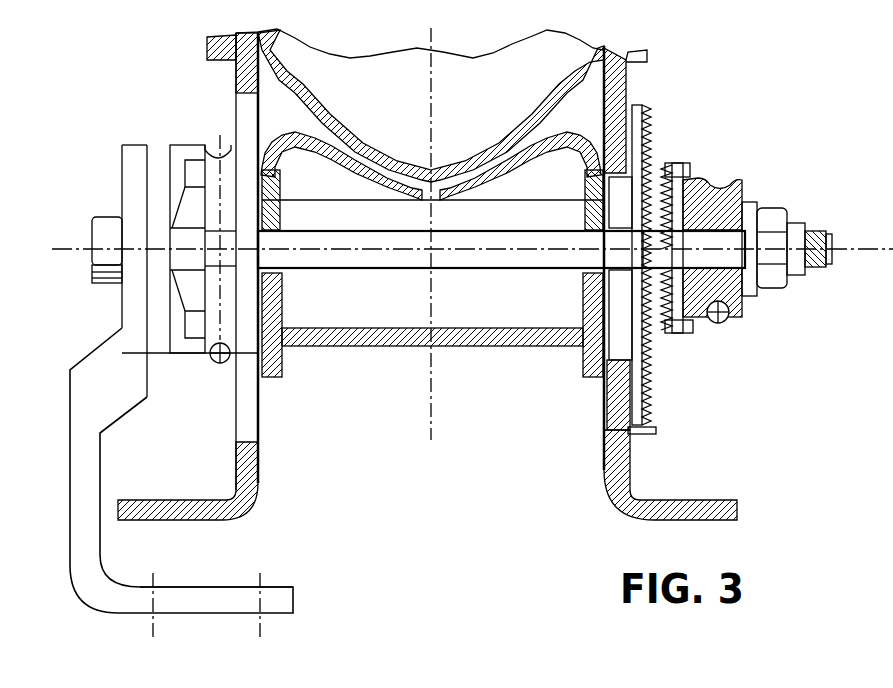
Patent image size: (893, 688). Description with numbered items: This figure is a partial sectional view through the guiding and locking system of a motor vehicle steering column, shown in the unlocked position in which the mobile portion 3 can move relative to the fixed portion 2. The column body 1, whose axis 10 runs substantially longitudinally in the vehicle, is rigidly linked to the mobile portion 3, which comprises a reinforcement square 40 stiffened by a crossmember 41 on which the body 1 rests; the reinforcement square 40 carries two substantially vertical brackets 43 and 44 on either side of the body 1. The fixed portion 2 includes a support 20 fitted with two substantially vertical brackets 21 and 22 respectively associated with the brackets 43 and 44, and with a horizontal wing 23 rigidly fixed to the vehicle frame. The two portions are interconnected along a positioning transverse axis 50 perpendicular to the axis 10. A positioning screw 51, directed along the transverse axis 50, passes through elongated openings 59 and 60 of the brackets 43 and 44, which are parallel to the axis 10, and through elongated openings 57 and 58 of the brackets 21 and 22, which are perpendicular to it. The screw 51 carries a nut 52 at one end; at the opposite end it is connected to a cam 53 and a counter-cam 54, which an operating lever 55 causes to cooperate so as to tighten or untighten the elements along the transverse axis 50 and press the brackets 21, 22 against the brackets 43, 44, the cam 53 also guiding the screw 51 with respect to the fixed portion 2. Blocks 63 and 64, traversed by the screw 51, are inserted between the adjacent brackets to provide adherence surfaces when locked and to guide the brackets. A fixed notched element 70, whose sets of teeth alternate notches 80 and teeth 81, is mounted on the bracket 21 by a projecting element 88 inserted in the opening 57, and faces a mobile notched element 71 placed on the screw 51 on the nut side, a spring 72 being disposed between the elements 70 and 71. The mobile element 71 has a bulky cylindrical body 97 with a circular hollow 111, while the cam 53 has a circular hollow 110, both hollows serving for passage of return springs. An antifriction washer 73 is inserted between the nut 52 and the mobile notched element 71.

The body 1 is at (548, 106).
The fixed portion 2 is at (632, 80).
The mobile portion 3 is at (391, 355).
The axis 10 is at (471, 681).
The support 20 is at (236, 78).
The bracket 21 is at (608, 465).
The bracket 22 is at (260, 478).
The wing 23 is at (208, 46).
The reinforcement square 40 is at (313, 220).
The crossmember 41 is at (494, 320).
The bracket 43 is at (585, 366).
The bracket 44 is at (273, 364).
The positioning transverse axis 50 is at (843, 247).
The positioning screw 51 is at (482, 254).
The nut 52 is at (773, 218).
The cam 53 is at (200, 150).
The counter-cam 54 is at (152, 152).
The operating lever 55 is at (132, 603).
The elongated opening 57 is at (624, 338).
The elongated opening 58 is at (238, 412).
The elongated opening 59 is at (581, 276).
The elongated opening 60 is at (285, 276).
The block 63 is at (576, 228).
The block 64 is at (306, 152).
The fixed notched element 70 is at (655, 118).
The mobile notched element 71 is at (729, 167).
The spring 72 is at (690, 334).
The antifriction washer 73 is at (753, 284).
The notch 80 is at (652, 418).
The tooth 81 is at (657, 436).
The projecting element 88 is at (608, 408).
The cylindrical body 97 is at (740, 303).
The circular hollow 110 is at (214, 366).
The circular hollow 111 is at (722, 325).